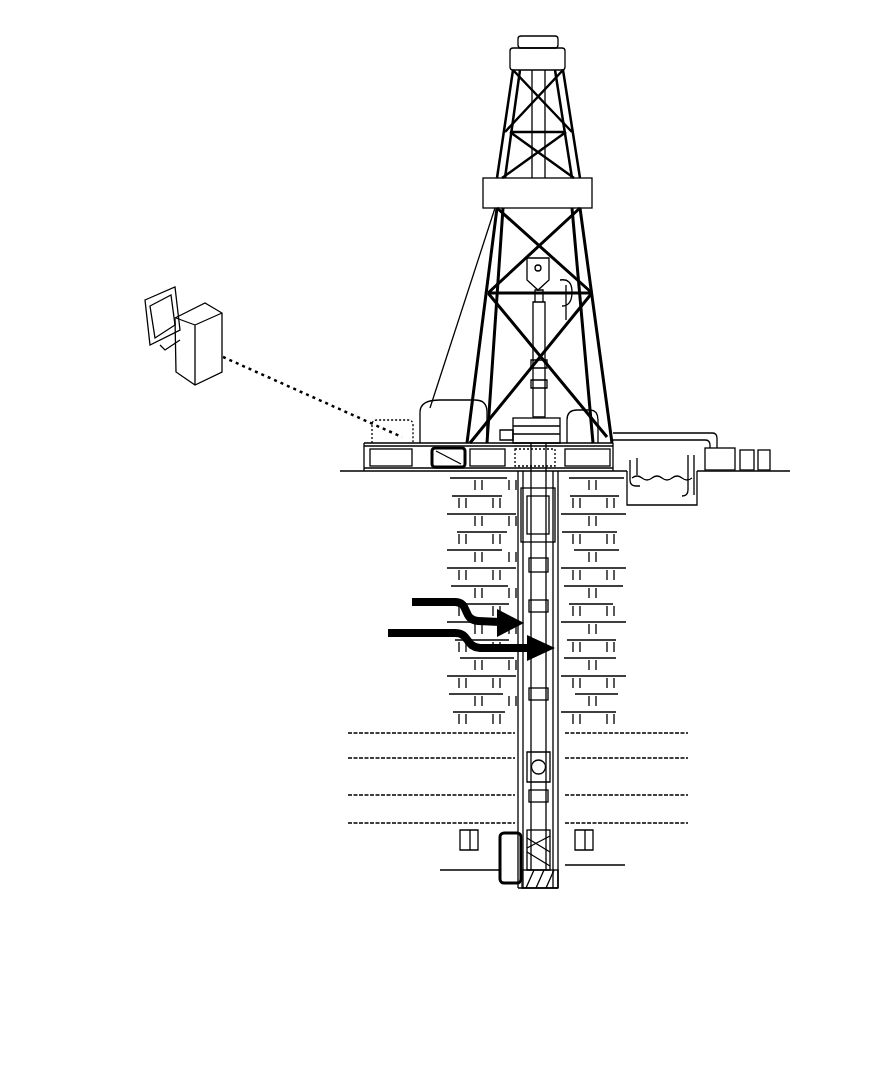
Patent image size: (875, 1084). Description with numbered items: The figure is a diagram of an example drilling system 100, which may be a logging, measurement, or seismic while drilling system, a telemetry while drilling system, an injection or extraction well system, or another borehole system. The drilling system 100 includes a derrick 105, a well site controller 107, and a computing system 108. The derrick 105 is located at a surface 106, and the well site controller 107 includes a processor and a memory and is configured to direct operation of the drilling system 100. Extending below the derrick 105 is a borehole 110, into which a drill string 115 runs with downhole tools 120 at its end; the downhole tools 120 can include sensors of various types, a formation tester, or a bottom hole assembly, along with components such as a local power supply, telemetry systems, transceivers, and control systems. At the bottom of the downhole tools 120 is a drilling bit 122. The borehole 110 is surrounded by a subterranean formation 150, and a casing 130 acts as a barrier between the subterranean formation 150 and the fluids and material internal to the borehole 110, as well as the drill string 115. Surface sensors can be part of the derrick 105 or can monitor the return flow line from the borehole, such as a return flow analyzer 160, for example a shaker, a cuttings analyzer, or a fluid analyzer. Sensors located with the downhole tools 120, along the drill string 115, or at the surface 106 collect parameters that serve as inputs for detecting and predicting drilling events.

The drilling system 100 is at (245, 88).
The derrick 105 is at (588, 238).
The surface 106 is at (360, 469).
The well site controller 107 is at (430, 455).
The computing system 108 is at (150, 297).
The borehole 110 is at (568, 592).
The drill string 115 is at (545, 668).
The downhole tools 120 is at (500, 856).
The drilling bit 122 is at (530, 889).
The casing 130 is at (448, 624).
The subterranean formation 150 is at (650, 748).
The return flow analyzer 160 is at (727, 447).